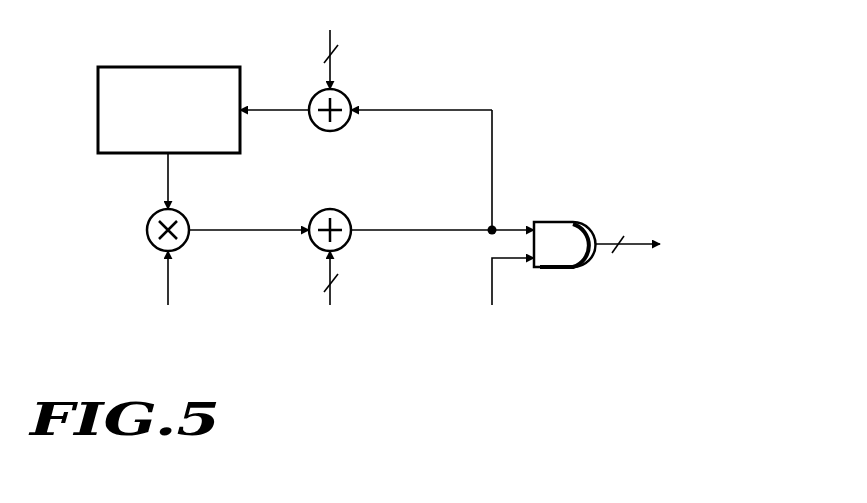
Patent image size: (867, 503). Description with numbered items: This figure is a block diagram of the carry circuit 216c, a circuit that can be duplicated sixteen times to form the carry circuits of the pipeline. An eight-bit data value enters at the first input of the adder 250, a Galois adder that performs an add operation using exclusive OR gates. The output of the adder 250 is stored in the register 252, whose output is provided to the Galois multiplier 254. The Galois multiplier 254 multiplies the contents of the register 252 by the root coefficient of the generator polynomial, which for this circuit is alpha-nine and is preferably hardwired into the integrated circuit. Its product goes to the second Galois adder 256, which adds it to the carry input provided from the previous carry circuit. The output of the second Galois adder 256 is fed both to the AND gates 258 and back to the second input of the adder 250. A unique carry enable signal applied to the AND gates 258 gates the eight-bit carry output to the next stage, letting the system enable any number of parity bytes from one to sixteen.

The carry circuit 216c is at (582, 32).
The register 252 is at (150, 66).
The adder 250 is at (345, 128).
The Galois multiplier 254 is at (148, 220).
The second Galois adder 256 is at (343, 214).
The AND gates 258 is at (565, 269).